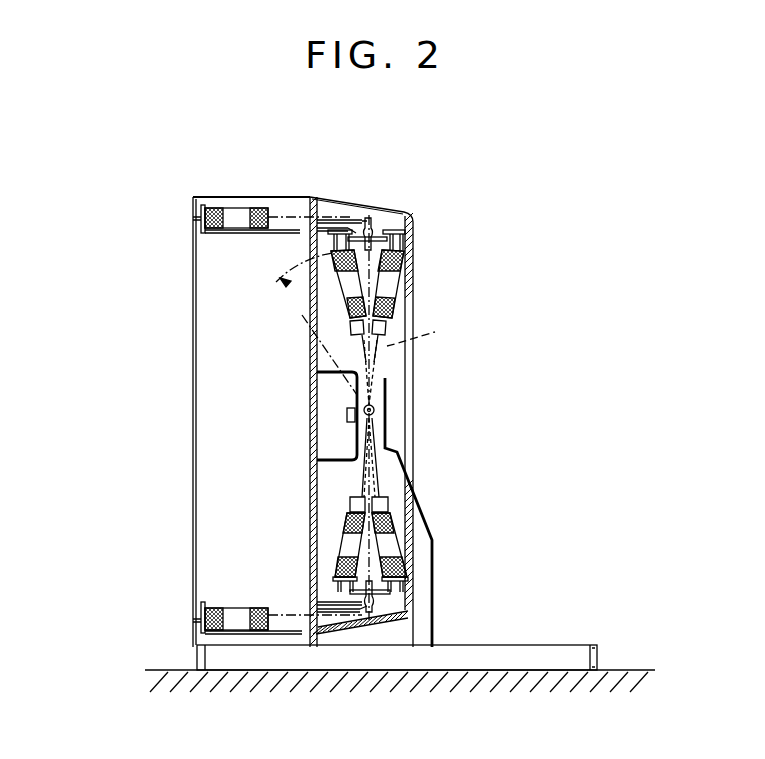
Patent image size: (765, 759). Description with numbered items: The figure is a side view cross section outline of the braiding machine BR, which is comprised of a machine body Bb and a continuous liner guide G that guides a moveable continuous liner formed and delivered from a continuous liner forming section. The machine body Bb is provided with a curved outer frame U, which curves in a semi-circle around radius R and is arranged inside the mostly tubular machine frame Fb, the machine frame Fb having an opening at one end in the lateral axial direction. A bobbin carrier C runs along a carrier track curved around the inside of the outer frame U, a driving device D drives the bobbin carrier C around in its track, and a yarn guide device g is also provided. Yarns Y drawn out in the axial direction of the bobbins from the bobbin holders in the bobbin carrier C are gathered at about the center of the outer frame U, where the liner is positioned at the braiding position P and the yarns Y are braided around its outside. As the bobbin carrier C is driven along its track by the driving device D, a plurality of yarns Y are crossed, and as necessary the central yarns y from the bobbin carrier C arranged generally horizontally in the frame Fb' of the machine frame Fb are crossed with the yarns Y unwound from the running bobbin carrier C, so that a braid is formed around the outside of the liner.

The braiding machine BR is at (445, 200).
The machine frame Fb is at (358, 179).
The frame Fb' is at (161, 422).
The machine body Bb is at (304, 188).
The bobbin carrier C is at (230, 209).
The central yarns y is at (282, 215).
The curved outer frame U is at (405, 268).
The braiding position P is at (378, 408).
The continuous liner guide G is at (333, 433).
The yarn guide device g is at (390, 433).
The radius R is at (316, 324).
The yarns Y is at (419, 332).
The driving device D is at (378, 636).